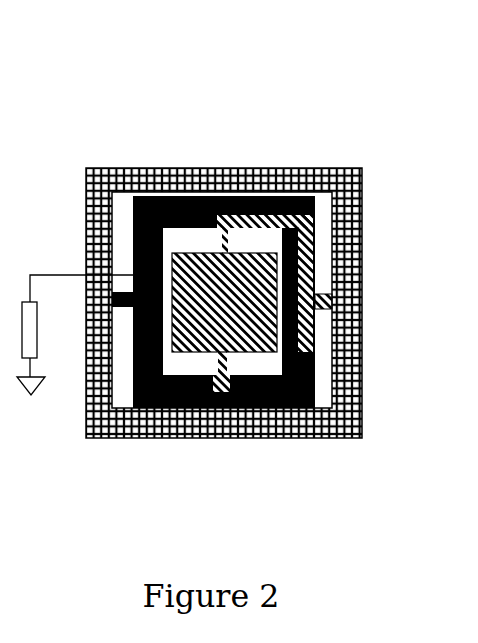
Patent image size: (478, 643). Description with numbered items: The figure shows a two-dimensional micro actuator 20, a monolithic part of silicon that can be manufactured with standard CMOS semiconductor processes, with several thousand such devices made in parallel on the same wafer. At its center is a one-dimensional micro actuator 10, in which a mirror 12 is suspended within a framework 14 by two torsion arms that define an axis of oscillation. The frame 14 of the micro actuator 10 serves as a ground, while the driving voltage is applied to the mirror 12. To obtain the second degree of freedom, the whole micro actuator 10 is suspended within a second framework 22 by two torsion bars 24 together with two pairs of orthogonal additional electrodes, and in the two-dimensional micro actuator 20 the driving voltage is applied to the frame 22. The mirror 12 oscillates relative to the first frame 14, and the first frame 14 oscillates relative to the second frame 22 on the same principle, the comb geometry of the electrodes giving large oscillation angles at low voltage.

The 2D micro actuator 20 is at (137, 90).
The micro actuator 10 is at (133, 235).
The mirror 12 is at (243, 277).
The framework 14 is at (268, 195).
The second framework 22 is at (350, 248).
The torsion bars 24 is at (333, 300).